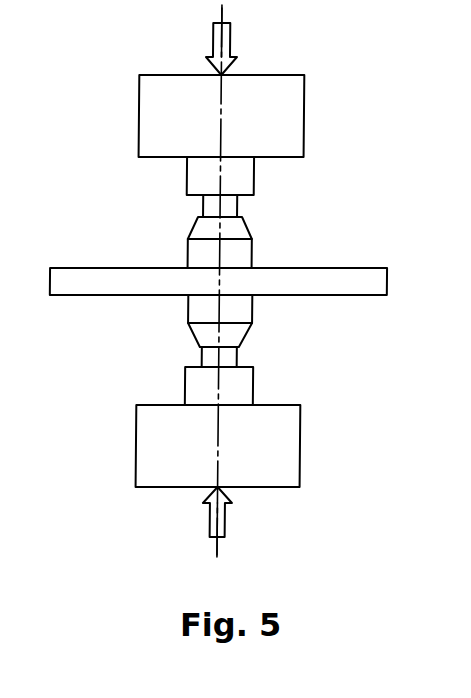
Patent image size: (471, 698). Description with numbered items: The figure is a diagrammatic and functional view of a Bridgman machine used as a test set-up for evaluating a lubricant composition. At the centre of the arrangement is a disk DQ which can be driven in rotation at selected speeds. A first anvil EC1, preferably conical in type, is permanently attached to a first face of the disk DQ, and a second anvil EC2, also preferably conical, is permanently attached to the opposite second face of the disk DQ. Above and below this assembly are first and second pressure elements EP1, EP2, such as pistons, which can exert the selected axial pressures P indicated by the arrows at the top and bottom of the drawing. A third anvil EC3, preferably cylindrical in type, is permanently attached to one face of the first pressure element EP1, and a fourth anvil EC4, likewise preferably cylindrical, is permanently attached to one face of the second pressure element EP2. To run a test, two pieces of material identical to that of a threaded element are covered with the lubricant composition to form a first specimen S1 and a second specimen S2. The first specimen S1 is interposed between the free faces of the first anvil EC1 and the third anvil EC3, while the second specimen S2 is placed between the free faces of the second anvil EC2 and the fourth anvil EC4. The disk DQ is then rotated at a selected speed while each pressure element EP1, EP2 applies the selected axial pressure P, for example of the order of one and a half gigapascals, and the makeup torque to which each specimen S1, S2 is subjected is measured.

The axial pressure P is at (230, 48).
The first pressure element EP1 is at (140, 130).
The second pressure element EP2 is at (140, 462).
The third anvil EC3 is at (188, 178).
The fourth anvil EC4 is at (188, 395).
The first anvil EC1 is at (190, 258).
The second anvil EC2 is at (192, 332).
The first specimen S1 is at (239, 207).
The second specimen S2 is at (240, 360).
The disk DQ is at (52, 287).